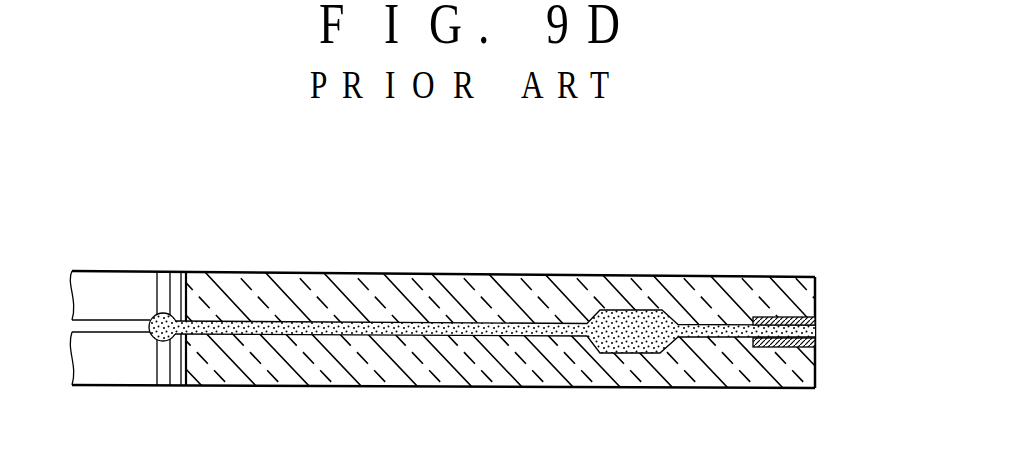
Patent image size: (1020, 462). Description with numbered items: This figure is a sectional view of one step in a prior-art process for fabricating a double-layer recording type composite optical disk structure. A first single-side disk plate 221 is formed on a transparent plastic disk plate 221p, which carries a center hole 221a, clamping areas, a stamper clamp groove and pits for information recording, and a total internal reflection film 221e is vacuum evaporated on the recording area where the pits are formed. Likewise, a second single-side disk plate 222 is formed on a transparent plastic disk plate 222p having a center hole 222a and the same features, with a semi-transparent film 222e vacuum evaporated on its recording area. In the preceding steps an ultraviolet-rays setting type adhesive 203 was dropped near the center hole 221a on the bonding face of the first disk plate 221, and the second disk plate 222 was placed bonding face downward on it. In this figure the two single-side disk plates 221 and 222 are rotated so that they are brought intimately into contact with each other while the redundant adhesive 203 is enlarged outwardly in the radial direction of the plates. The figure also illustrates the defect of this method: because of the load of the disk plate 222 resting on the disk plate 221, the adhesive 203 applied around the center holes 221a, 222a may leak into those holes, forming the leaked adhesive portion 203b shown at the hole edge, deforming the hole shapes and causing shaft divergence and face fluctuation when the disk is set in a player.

The second single-side disk plate 222 is at (421, 270).
The transparent plastic disk plate 222p is at (497, 303).
The center hole 222a is at (178, 281).
The semi-transparent film 222e is at (778, 322).
The first single-side disk plate 221 is at (422, 391).
The transparent plastic disk plate 221p is at (485, 365).
The center hole 221a is at (176, 386).
The total internal reflection film 221e is at (778, 343).
The ultraviolet-rays setting type adhesive 203 is at (622, 320).
The filling material bulge 203b is at (160, 312).